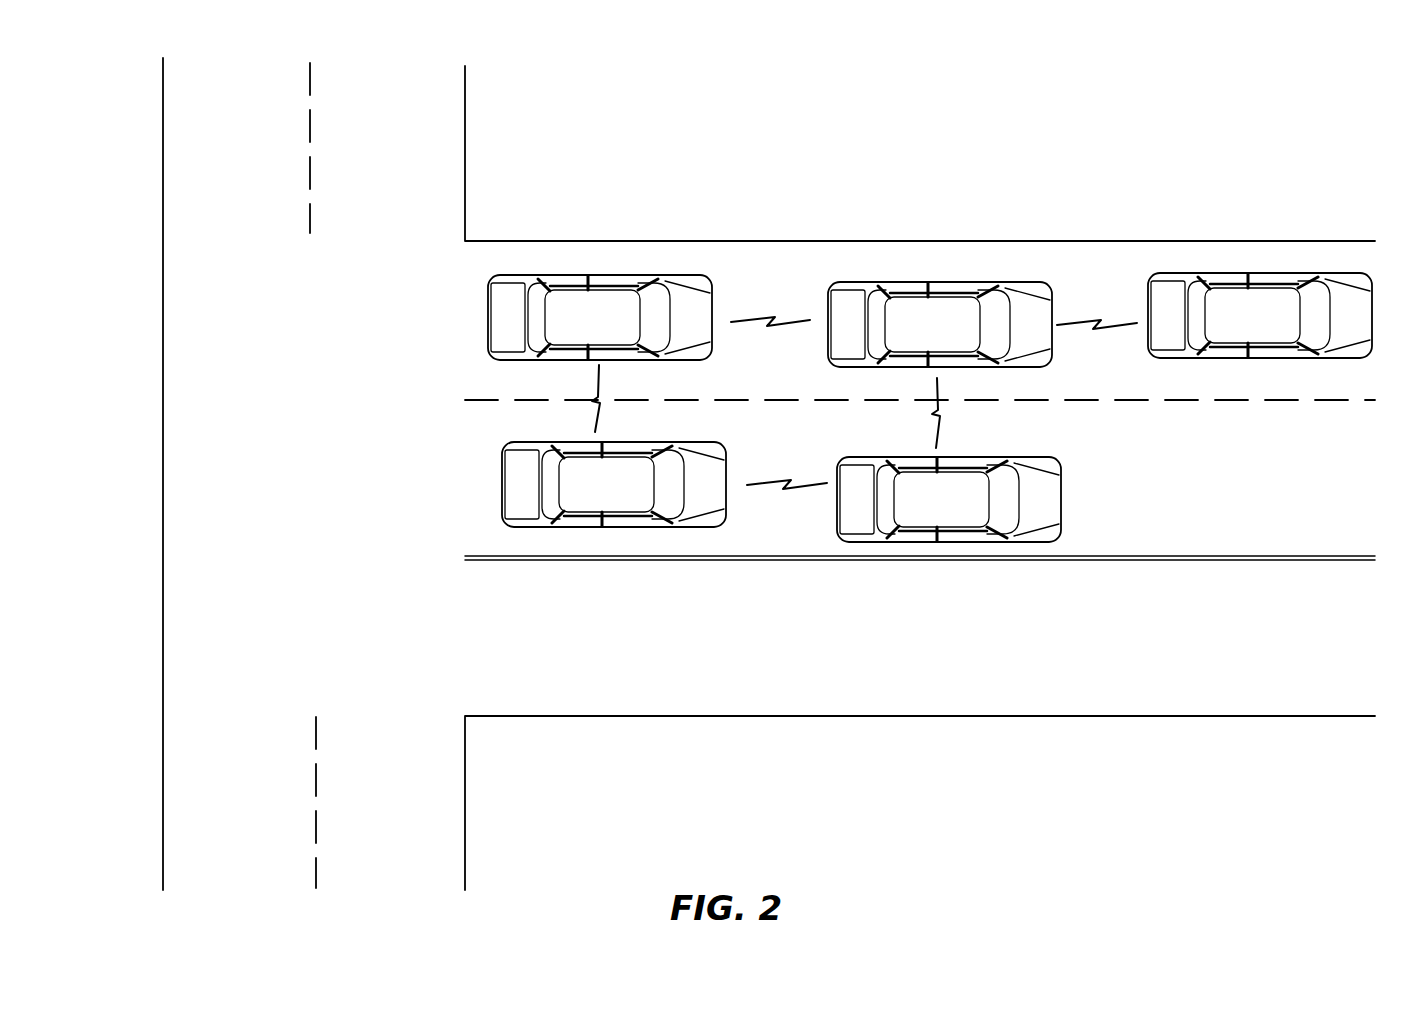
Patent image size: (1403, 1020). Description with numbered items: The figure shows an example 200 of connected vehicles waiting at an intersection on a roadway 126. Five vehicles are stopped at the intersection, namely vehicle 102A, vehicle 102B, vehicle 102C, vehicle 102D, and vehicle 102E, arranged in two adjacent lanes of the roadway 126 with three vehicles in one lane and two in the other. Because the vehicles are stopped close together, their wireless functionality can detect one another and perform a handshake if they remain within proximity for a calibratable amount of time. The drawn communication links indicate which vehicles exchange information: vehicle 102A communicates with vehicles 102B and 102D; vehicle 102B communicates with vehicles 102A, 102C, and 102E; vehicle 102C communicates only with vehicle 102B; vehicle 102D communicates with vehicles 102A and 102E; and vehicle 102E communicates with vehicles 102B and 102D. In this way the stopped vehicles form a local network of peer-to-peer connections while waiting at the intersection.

The example 200 is at (240, 32).
The roadway 126 is at (1137, 240).
The vehicle 102A is at (600, 317).
The vehicle 102B is at (940, 324).
The vehicle 102C is at (1260, 315).
The vehicle 102D is at (614, 484).
The vehicle 102E is at (949, 499).